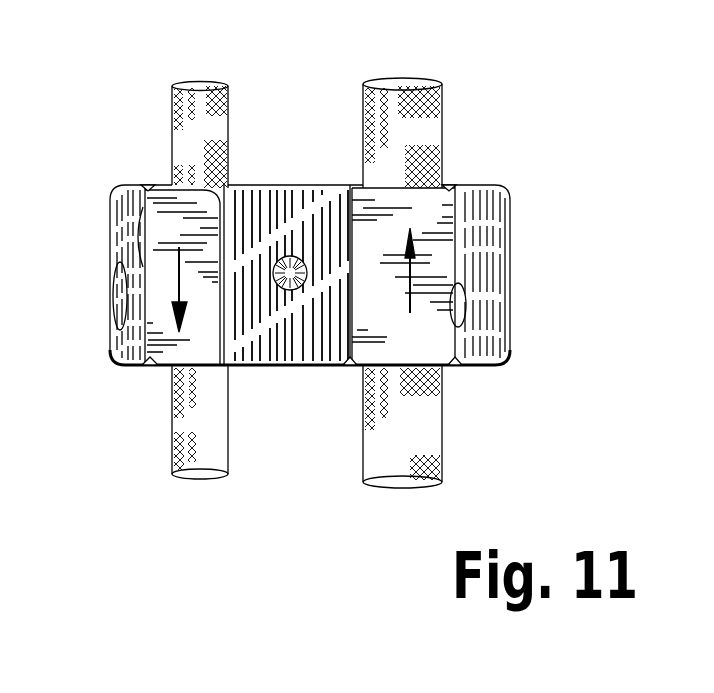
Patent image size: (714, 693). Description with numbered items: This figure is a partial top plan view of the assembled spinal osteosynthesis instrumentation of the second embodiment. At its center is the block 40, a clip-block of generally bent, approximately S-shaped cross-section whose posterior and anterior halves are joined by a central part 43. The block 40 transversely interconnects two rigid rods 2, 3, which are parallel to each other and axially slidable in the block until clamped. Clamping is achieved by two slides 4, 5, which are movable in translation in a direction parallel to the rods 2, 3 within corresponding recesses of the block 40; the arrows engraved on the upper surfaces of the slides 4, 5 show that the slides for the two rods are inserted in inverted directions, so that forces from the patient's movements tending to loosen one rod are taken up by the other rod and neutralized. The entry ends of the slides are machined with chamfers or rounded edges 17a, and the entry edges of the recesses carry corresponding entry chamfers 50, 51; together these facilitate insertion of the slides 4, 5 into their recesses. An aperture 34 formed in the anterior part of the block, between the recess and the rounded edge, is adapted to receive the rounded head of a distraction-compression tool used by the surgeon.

The rigid rod 2 is at (437, 111).
The rigid rod 3 is at (225, 117).
The slide 4 is at (155, 175).
The slide 5 is at (475, 254).
The chamfer 17a is at (447, 185).
The aperture 34 is at (122, 300).
The block 40 is at (295, 135).
The central part 43 is at (285, 352).
The entry chamfer 50 is at (150, 185).
The entry chamfer 51 is at (452, 367).